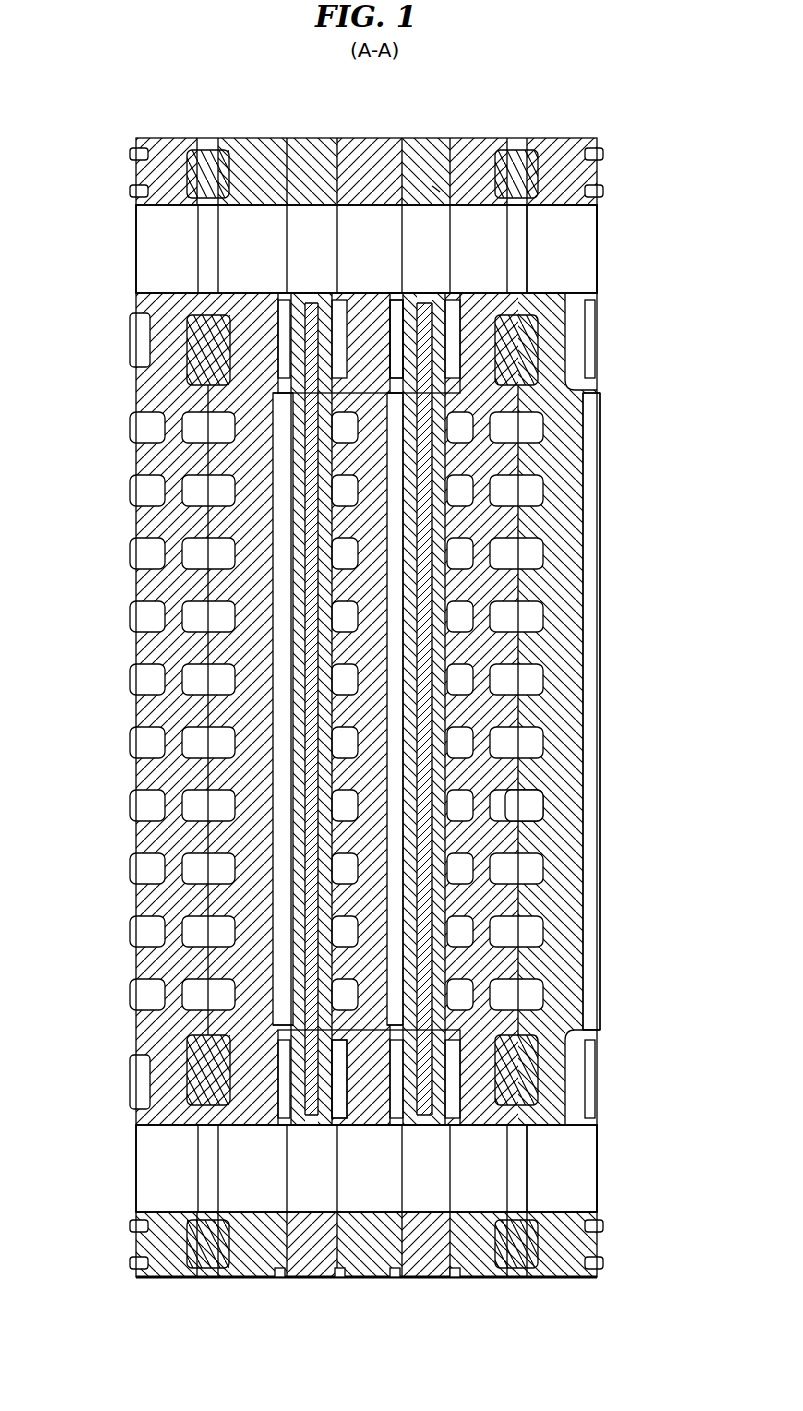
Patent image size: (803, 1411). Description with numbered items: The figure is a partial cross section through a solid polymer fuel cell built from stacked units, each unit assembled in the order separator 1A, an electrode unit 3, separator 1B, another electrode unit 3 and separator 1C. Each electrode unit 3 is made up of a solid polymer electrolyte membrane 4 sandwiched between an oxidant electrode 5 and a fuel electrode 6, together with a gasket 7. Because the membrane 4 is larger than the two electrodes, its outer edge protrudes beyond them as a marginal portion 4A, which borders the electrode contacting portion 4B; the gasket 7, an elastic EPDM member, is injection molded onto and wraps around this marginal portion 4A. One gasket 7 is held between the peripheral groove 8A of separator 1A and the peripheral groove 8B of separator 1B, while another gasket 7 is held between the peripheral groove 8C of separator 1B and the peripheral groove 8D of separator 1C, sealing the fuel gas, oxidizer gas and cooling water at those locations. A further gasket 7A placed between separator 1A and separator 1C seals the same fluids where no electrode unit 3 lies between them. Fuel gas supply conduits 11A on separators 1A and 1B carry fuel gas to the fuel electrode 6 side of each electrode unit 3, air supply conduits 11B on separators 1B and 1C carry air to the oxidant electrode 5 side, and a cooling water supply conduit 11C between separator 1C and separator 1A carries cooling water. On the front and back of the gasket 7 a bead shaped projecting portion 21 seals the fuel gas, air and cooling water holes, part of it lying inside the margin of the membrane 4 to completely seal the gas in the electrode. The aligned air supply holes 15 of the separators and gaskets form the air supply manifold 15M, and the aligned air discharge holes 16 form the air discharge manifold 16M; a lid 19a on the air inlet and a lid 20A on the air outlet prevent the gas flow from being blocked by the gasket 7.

The separator 1A is at (158, 150).
The separator 1B is at (370, 150).
The separator 1C is at (258, 152).
The gasket 7 is at (317, 158).
The gasket 7A is at (212, 156).
The air supply holes 15 is at (202, 252).
The air supply manifold 15M is at (585, 229).
The air discharge holes 16 is at (202, 1173).
The air discharge manifold 16M is at (585, 1178).
The electrode unit 3 is at (288, 455).
The solid polymer electrolyte membrane 4 is at (425, 530).
The solid polymer electrolyte membrane marginal portion 4A is at (468, 361).
The electrode contacting portion 4B is at (423, 655).
The oxidant electrode 5 is at (420, 527).
The fuel electrode 6 is at (437, 598).
The fuel gas supply conduits 11A is at (460, 680).
The air supply conduits 11B is at (280, 648).
The cooling water supply conduit 11C is at (520, 805).
The lid 19a is at (394, 336).
The projecting portion 21 is at (440, 188).
The lid 20A is at (390, 1080).
The peripheral groove 8A is at (455, 1278).
The peripheral groove 8B is at (396, 1278).
The peripheral groove 8C is at (340, 1278).
The peripheral groove 8D is at (278, 1278).